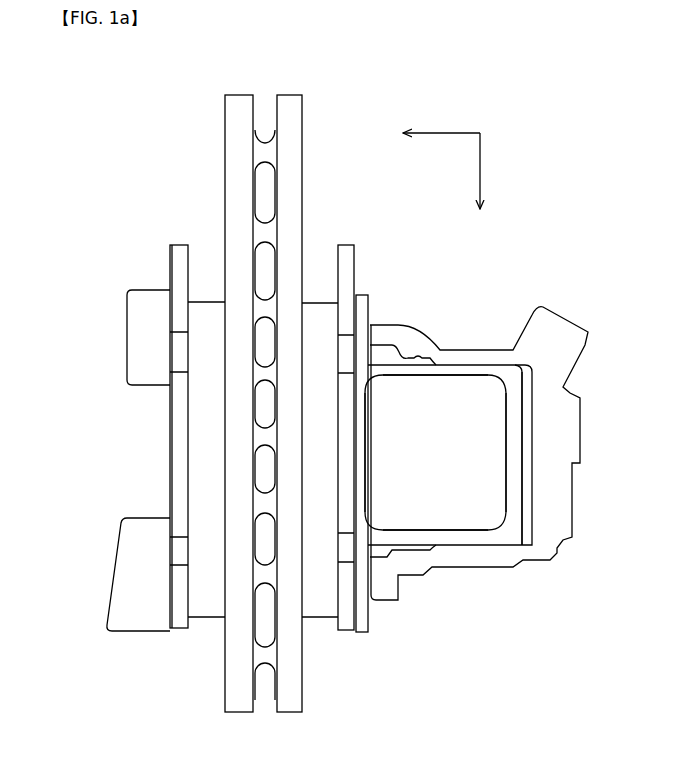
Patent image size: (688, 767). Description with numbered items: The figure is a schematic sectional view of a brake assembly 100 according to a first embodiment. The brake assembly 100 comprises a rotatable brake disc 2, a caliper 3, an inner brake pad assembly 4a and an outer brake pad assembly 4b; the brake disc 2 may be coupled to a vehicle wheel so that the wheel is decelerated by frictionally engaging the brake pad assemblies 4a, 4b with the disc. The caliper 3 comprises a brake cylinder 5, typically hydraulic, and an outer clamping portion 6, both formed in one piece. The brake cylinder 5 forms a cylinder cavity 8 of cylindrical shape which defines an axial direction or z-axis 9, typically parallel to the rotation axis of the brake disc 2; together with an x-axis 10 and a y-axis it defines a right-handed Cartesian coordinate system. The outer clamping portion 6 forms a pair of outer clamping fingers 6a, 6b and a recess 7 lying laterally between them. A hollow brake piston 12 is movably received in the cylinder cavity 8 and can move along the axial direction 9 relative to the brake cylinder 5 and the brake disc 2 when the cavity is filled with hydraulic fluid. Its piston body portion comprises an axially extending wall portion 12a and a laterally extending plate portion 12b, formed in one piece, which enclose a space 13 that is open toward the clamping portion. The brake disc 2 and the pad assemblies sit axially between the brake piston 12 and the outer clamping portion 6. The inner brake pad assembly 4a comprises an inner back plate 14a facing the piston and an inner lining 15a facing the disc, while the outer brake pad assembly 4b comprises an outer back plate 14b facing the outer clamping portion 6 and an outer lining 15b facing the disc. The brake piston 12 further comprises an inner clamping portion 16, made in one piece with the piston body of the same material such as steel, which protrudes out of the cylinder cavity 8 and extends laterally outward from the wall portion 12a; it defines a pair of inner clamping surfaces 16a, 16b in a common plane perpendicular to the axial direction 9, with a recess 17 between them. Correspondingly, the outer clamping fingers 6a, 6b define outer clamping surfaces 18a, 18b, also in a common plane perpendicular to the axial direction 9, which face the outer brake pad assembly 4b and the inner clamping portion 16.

The brake assembly 100 is at (490, 635).
The brake disc 2 is at (252, 417).
The inner brake pad assembly 4a is at (318, 662).
The outer brake pad assembly 4b is at (195, 670).
The caliper 3 is at (140, 262).
The brake cylinder 5 is at (470, 567).
The outer clamping portion 6 is at (115, 668).
The outer clamping finger 6a is at (127, 308).
The outer clamping finger 6b is at (118, 555).
The recess 7 is at (132, 452).
The cylinder cavity 8 is at (529, 480).
The axial direction (z-axis) 9 is at (435, 135).
The x-axis 10 is at (480, 170).
The brake piston 12 is at (531, 437).
The wall portion 12a is at (430, 378).
The plate portion 12b is at (500, 415).
The space 13 is at (440, 472).
The inner back plate 14a is at (358, 431).
The outer back plate 14b is at (179, 412).
The inner lining 15a is at (312, 300).
The outer lining 15b is at (208, 300).
The inner clamping portion 16 is at (373, 292).
The inner clamping surface 16a is at (358, 335).
The inner clamping surface 16b is at (357, 590).
The recess 17 is at (368, 448).
The outer clamping surface 18a is at (168, 335).
The outer clamping surface 18b is at (165, 583).